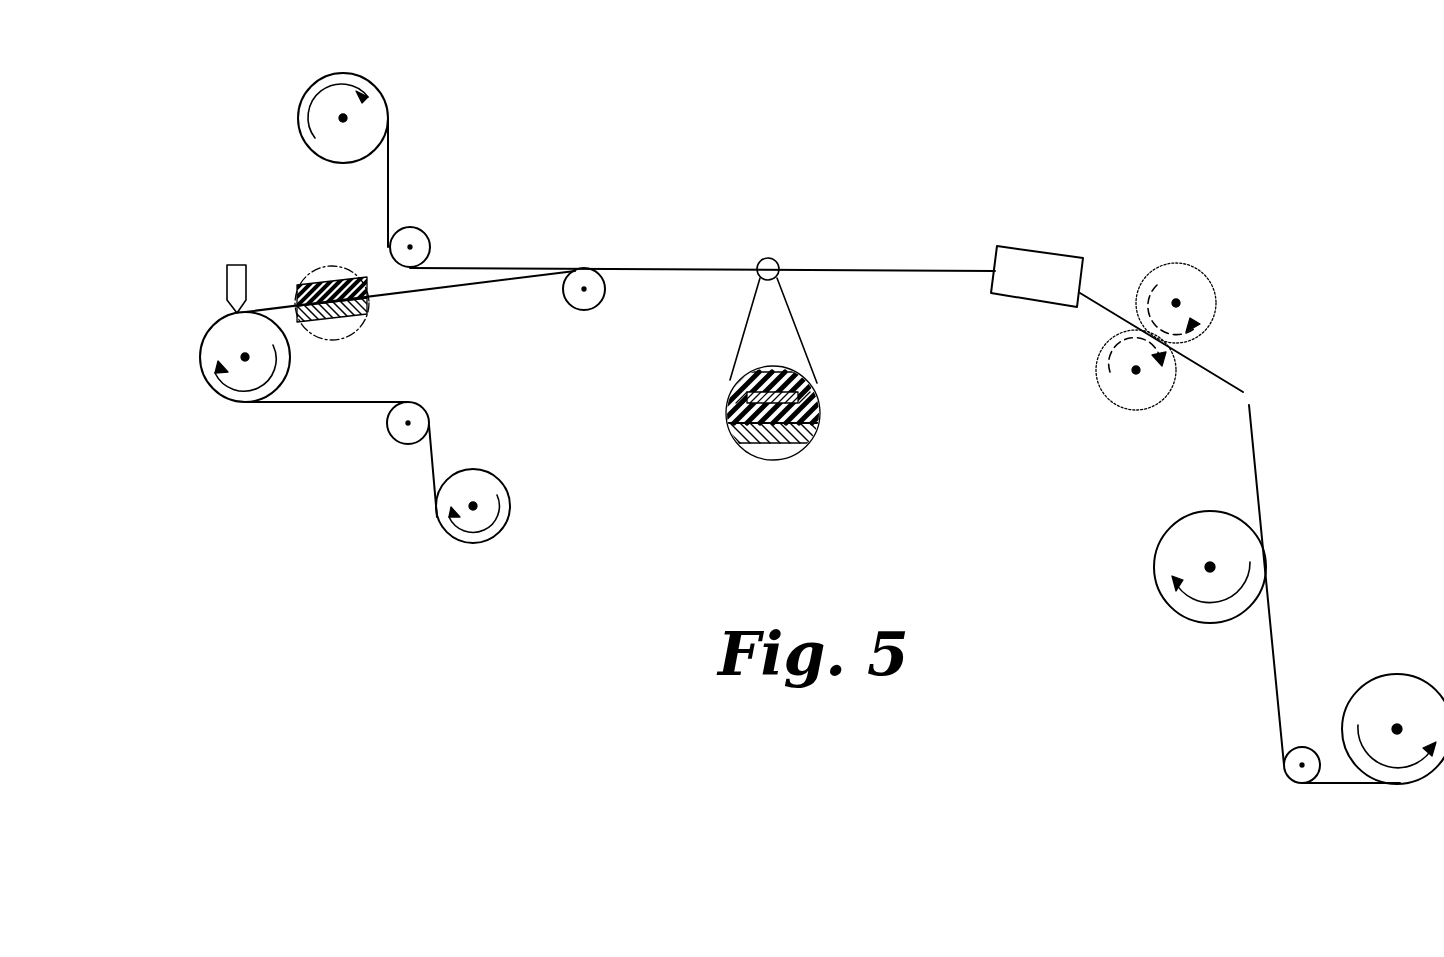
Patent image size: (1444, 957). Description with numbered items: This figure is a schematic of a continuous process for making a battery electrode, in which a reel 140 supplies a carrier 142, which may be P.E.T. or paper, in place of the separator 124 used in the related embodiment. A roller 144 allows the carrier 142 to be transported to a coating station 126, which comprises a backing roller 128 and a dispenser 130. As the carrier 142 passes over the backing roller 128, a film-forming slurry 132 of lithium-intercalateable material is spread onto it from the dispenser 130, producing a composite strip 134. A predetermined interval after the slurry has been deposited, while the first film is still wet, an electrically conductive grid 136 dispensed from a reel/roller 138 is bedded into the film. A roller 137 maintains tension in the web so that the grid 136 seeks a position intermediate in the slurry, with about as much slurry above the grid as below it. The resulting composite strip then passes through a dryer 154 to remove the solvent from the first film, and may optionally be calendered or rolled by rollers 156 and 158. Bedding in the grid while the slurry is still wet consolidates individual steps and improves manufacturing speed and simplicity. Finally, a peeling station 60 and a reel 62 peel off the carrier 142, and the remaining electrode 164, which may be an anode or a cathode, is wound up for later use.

The peeling station 60 is at (1305, 745).
The reel 62 is at (1397, 672).
The separator 124 is at (337, 322).
The coating station 126 is at (195, 288).
The backing roller 128 is at (213, 388).
The dispenser 130 is at (230, 263).
The film-forming slurry 132 is at (347, 280).
The composite strip 134 is at (315, 272).
The electrically conductive grid 136 is at (390, 147).
The roller 137 is at (590, 312).
The reel/roller 138 is at (307, 98).
The reel 140 is at (510, 502).
The carrier 142 is at (428, 463).
The roller 144 is at (393, 435).
The dryer 154 is at (1052, 252).
The rollers 156 is at (1213, 280).
The rollers 158 is at (770, 462).
The electrode 164 is at (1198, 623).